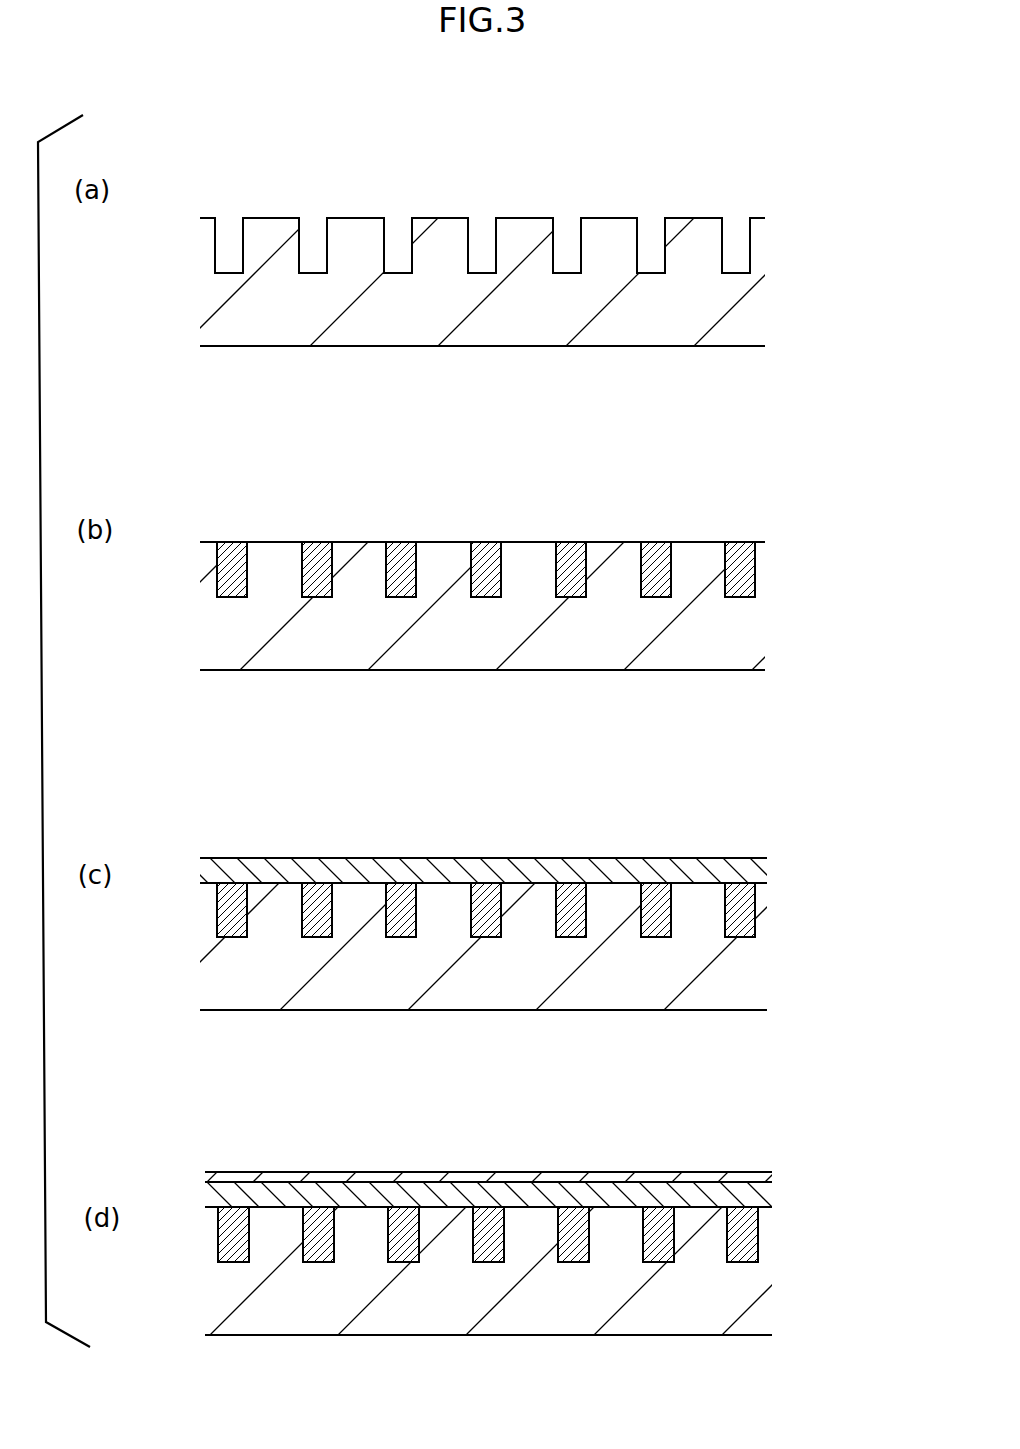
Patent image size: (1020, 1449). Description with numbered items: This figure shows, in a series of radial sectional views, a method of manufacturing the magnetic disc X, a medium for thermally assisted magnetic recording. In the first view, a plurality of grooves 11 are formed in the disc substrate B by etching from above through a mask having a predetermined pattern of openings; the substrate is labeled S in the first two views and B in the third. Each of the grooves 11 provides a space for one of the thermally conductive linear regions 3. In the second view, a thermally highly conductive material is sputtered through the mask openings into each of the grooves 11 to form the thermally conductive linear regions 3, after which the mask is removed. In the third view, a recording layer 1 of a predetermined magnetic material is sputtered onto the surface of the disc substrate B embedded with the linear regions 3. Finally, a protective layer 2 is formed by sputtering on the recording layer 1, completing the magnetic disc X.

The grooves 11 is at (314, 242).
The thermally conductive linear regions 3 is at (322, 548).
The recording layer 1 is at (614, 868).
The protective layer 2 is at (398, 1178).
The substrate S is at (276, 326).
The disc substrate B is at (362, 997).
The magnetic disc X is at (202, 1160).